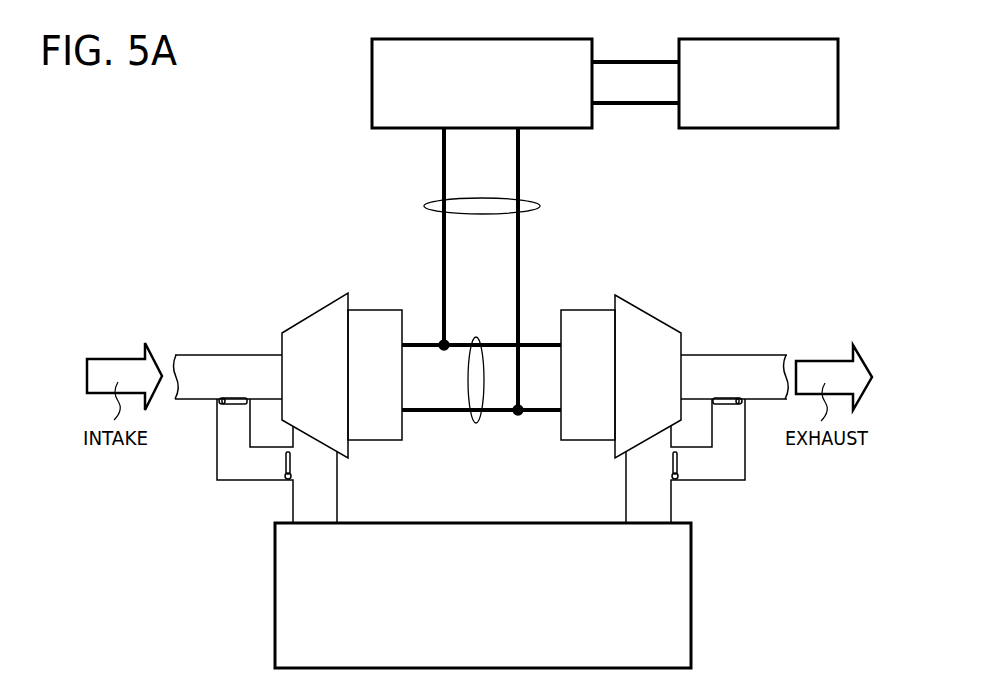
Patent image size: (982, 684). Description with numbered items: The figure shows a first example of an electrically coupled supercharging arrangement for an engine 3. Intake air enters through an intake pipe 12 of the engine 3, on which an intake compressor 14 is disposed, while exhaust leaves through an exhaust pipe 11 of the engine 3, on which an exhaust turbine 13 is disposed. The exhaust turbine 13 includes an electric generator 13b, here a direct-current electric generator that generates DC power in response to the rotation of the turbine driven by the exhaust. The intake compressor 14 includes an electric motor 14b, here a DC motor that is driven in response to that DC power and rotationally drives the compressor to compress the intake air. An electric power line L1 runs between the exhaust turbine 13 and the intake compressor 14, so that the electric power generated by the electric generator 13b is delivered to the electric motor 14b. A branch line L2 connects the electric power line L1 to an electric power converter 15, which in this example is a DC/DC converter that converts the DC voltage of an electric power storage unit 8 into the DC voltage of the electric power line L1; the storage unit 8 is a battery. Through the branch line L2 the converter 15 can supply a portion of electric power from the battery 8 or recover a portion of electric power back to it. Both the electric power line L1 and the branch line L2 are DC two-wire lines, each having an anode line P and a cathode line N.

The electric power converter 15 is at (372, 60).
The electric power storage unit 8 is at (838, 55).
The branch line L2 is at (539, 206).
The anode line P is at (532, 343).
The cathode line N is at (537, 415).
The electric power line L1 is at (476, 423).
The electric motor 14b is at (373, 310).
The intake compressor 14 is at (300, 289).
The intake pipe 12 is at (210, 355).
The electric generator 13b is at (592, 308).
The exhaust turbine 13 is at (660, 286).
The exhaust pipe 11 is at (717, 355).
The engine 3 is at (505, 523).